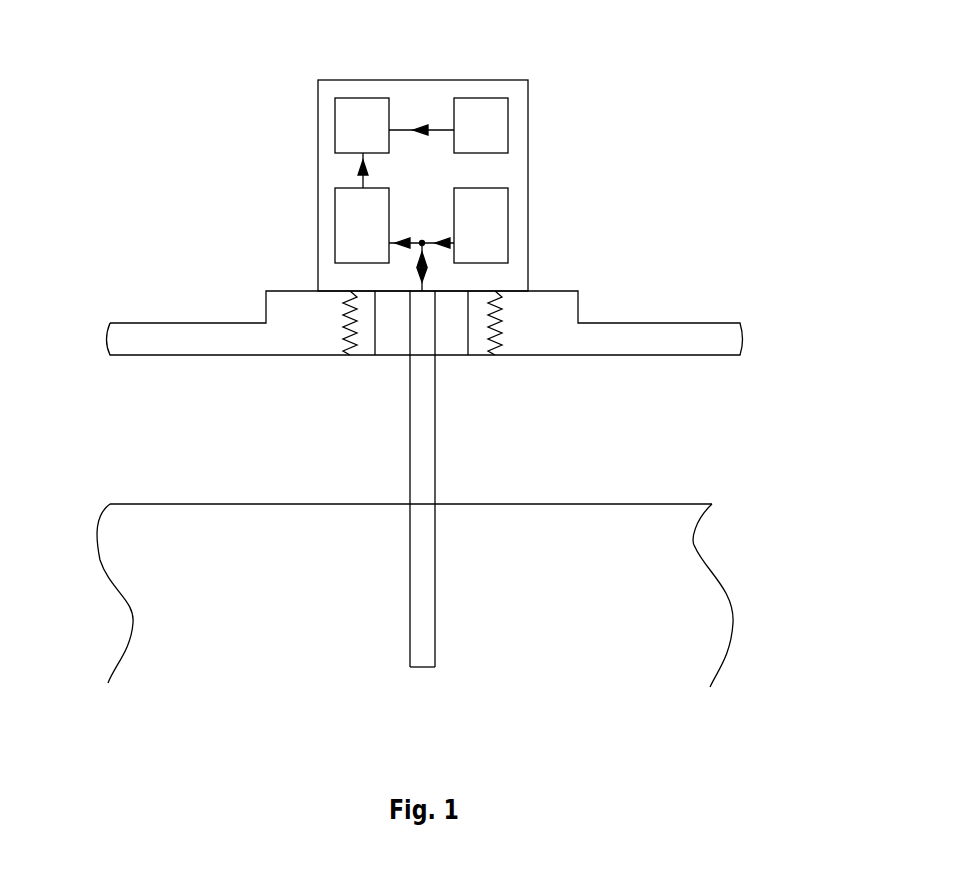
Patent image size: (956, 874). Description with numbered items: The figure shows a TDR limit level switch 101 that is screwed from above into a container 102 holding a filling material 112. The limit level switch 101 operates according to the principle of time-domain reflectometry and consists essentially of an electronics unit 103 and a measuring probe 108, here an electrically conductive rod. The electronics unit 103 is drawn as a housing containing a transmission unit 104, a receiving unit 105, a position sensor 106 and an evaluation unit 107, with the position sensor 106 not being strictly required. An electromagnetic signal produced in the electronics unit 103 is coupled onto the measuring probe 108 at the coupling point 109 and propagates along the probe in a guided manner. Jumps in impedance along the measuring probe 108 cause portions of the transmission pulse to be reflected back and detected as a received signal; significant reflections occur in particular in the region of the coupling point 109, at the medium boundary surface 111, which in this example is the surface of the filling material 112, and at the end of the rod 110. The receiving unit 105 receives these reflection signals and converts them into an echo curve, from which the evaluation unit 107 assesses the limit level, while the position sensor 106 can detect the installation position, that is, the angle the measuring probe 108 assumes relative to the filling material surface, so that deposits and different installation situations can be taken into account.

The TDR limit level switch 101 is at (445, 351).
The container 102 is at (658, 323).
The electronics unit 103 is at (495, 80).
The transmission unit 104 is at (500, 250).
The receiving unit 105 is at (347, 210).
The position sensor 106 is at (500, 125).
The evaluation unit 107 is at (347, 120).
The measuring probe 108 is at (435, 448).
The coupling point 109 is at (435, 357).
The end of the rod 110 is at (435, 667).
The medium boundary surface 111 is at (435, 503).
The filling material 112 is at (657, 575).